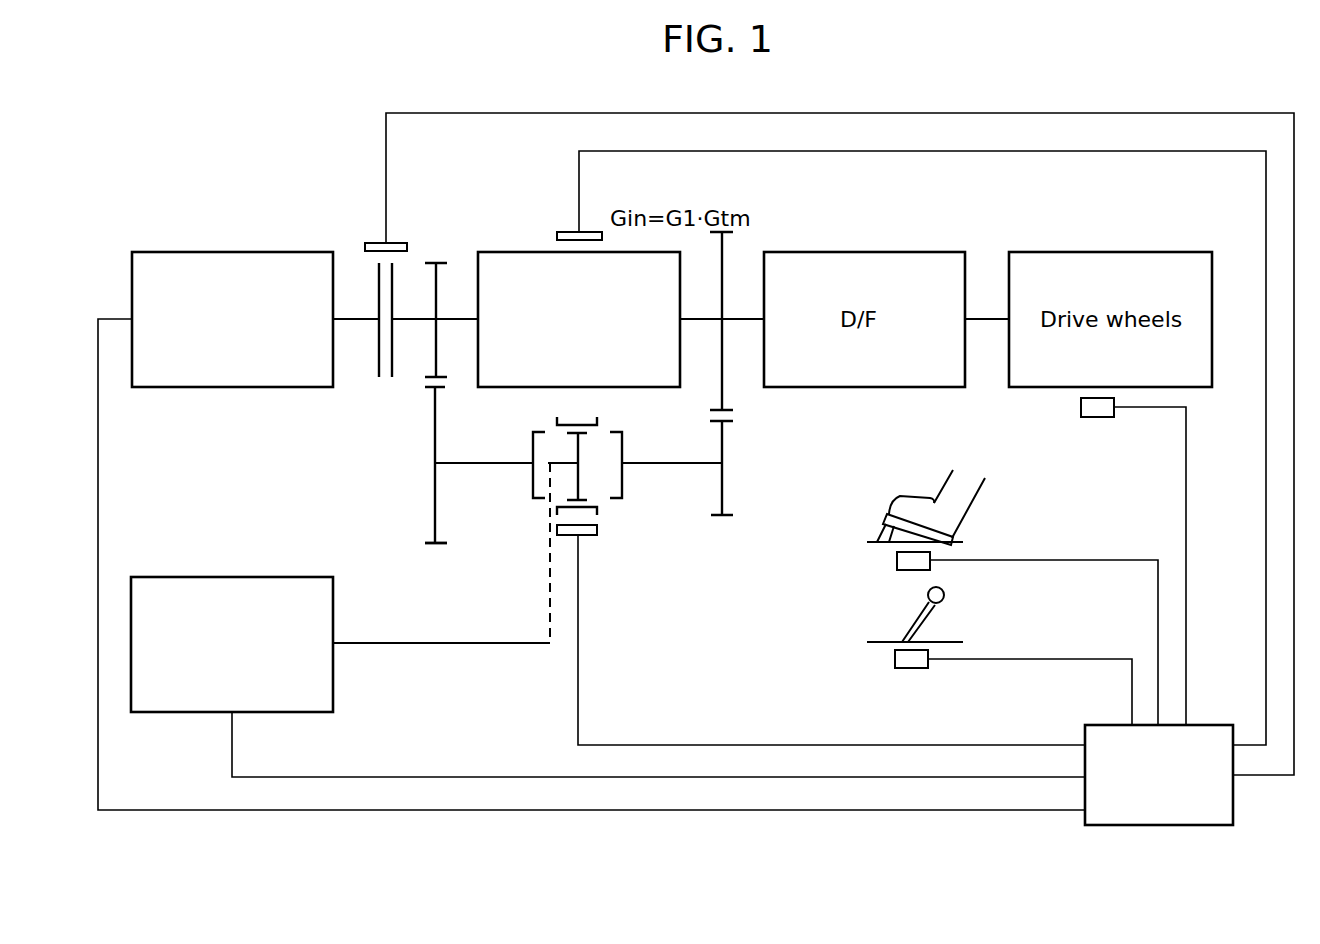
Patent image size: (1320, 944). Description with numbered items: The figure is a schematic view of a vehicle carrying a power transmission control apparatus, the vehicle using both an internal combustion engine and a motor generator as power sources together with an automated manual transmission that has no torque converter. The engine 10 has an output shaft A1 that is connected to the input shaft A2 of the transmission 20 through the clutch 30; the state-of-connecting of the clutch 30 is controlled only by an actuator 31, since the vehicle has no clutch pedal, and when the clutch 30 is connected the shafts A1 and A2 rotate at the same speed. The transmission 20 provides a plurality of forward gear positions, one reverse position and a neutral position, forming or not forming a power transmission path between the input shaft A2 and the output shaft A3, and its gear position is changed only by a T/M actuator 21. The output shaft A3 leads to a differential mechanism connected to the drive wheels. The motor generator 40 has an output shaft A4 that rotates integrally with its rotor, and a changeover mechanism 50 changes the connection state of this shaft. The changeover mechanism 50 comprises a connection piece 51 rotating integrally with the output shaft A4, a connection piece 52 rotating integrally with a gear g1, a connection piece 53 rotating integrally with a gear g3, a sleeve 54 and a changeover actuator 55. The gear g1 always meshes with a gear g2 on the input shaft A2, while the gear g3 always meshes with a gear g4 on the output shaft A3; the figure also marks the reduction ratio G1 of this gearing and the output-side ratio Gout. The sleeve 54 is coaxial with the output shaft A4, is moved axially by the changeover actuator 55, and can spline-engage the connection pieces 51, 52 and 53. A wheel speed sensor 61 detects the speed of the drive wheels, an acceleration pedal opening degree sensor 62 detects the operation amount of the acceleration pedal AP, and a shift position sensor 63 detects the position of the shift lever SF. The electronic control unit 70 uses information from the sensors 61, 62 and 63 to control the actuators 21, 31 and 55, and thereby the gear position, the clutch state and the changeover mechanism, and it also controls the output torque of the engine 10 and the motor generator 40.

The engine 10 is at (201, 389).
The transmission 20 is at (497, 389).
The T/M actuator 21 is at (561, 231).
The clutch 30 is at (371, 388).
The actuator 31 is at (374, 242).
The motor generator 40 is at (178, 714).
The changeover mechanism 50 is at (579, 479).
The connection piece 51 is at (580, 447).
The connection piece 52 is at (531, 488).
The connection piece 53 is at (620, 517).
The sleeve 54 is at (600, 425).
The changeover actuator 55 is at (596, 538).
The wheel speed sensor 61 is at (1095, 419).
The acceleration pedal opening degree sensor 62 is at (895, 560).
The shift position sensor 63 is at (893, 659).
The electronic control unit 70 is at (1216, 724).
The output shaft A1 is at (356, 322).
The input shaft A2 is at (415, 322).
The output shaft A3 is at (701, 322).
The output shaft A4 is at (417, 646).
The gear G1 is at (419, 465).
The gear g1 is at (437, 512).
The gear g2 is at (437, 287).
The gear g3 is at (724, 491).
The gear g4 is at (723, 270).
The output gear Gout is at (751, 415).
The acceleration pedal AP is at (878, 519).
The shift lever SF is at (911, 620).